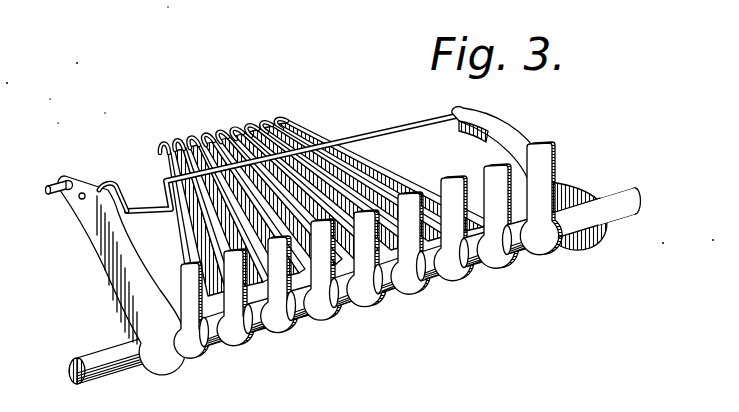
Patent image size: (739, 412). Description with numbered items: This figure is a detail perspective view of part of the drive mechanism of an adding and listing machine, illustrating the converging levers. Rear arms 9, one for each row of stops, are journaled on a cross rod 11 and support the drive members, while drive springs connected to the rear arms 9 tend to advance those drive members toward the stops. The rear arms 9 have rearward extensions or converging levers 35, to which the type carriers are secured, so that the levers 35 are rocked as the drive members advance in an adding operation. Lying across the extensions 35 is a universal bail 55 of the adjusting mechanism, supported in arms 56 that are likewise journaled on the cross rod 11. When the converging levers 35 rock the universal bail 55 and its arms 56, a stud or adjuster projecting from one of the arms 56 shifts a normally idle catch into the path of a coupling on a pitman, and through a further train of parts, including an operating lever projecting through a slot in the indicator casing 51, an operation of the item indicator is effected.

The rear arms 9 is at (463, 169).
The cross rod 11 is at (619, 200).
The converging levers 35 is at (173, 251).
The indicator casing 51 is at (47, 195).
The universal bail 55 is at (384, 129).
The arms 56 is at (102, 237).